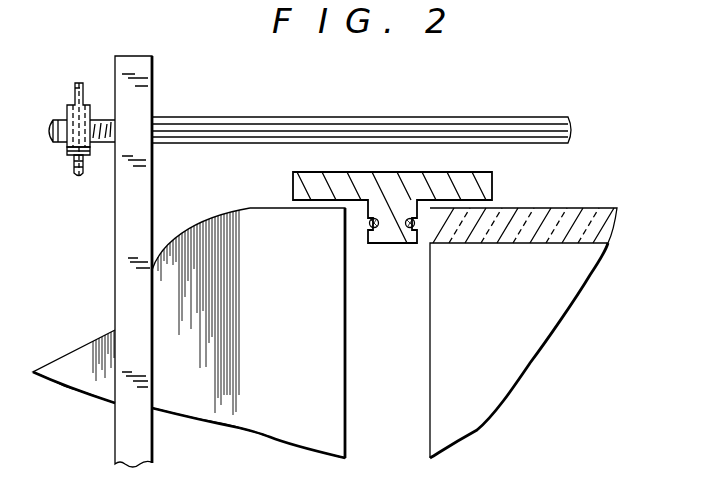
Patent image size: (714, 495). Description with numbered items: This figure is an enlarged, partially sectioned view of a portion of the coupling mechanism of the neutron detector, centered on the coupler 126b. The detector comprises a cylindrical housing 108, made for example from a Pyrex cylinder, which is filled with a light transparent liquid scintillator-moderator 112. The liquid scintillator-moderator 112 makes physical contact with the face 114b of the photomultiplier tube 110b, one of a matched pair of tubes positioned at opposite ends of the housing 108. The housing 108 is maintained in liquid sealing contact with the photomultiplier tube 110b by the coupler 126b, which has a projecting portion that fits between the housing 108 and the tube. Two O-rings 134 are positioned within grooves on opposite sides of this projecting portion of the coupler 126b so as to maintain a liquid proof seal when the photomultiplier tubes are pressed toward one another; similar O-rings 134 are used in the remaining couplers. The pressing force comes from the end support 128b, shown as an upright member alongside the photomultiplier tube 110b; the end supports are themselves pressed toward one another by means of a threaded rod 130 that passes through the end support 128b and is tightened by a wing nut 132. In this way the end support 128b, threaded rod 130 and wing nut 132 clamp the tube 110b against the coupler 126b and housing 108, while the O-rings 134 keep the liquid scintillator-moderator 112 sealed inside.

The housing 108 is at (604, 208).
The photomultiplier tube 110b is at (200, 215).
The liquid scintillator-moderator 112 is at (400, 347).
The face of photomultiplier tube 114b is at (345, 318).
The coupler 126b is at (492, 188).
The end support 128b is at (152, 84).
The threaded rod 130 is at (330, 130).
The wing nut 132 is at (75, 87).
The O-ring 134 is at (375, 230).